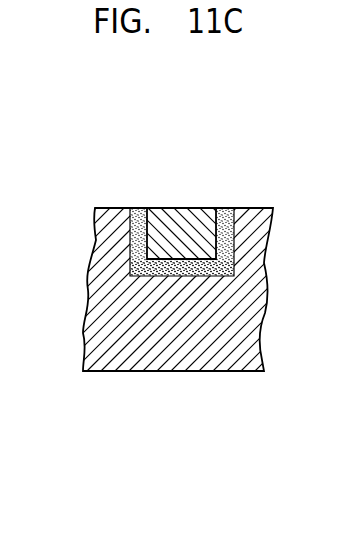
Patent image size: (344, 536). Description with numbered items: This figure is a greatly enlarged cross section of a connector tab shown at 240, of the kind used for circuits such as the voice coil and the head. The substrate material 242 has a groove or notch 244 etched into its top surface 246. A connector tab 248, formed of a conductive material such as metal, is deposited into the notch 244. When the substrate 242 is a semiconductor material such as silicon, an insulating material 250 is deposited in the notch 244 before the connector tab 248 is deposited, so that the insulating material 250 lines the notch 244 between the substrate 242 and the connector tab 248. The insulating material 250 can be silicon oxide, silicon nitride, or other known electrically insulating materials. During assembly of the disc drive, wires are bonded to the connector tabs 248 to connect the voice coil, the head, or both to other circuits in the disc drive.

The connector tab cross section 240 is at (172, 278).
The substrate material 242 is at (173, 365).
The notch 244 is at (129, 262).
The top surface 246 is at (108, 207).
The connector tab 248 is at (162, 208).
The insulating material 250 is at (137, 267).